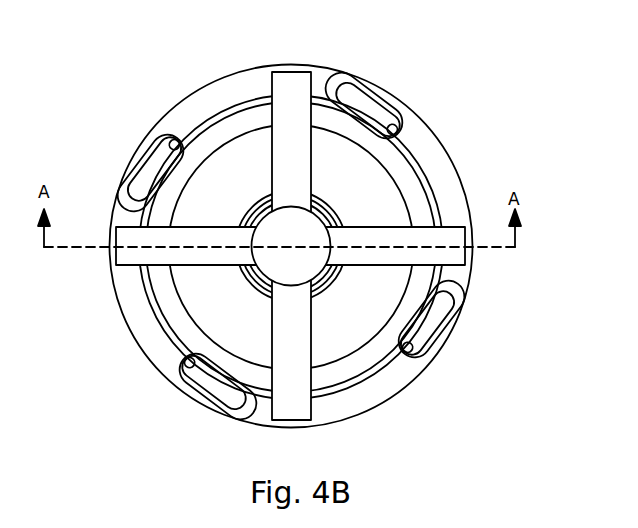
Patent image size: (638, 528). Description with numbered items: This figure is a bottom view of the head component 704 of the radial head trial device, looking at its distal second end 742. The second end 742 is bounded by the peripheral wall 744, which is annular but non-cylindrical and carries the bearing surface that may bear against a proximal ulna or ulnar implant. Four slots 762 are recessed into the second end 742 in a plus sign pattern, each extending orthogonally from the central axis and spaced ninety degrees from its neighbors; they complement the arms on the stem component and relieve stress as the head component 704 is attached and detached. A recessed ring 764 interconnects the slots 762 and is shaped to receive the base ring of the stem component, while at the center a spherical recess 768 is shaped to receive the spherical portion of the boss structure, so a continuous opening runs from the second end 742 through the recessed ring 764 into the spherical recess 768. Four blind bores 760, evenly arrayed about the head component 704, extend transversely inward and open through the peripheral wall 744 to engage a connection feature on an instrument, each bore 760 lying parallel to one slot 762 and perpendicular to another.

The head component 704 is at (291, 239).
The second end 742 is at (210, 317).
The peripheral wall 744 is at (123, 317).
The bores 760 is at (362, 108).
The slots 762 is at (293, 78).
The recessed ring 764 is at (330, 280).
The spherical recess 768 is at (273, 233).